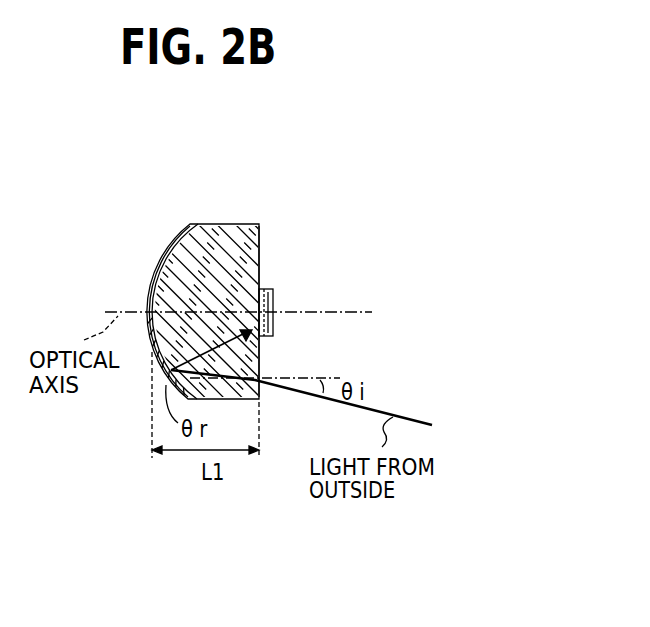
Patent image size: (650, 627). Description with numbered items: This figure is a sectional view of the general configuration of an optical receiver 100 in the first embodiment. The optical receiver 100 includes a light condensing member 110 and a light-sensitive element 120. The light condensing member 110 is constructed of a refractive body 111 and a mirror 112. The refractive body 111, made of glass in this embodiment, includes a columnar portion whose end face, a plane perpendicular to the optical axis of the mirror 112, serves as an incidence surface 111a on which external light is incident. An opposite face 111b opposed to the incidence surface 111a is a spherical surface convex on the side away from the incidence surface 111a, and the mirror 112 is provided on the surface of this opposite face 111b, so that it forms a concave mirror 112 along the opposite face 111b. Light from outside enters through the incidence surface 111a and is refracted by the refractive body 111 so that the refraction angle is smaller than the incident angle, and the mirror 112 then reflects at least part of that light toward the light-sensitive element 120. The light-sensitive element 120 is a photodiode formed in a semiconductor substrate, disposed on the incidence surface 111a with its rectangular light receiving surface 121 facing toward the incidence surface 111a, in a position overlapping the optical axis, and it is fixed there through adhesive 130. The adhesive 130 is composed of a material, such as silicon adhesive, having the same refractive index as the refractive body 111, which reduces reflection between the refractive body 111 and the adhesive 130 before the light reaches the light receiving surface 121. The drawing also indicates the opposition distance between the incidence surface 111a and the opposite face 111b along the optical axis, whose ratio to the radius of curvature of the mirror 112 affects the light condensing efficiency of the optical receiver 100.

The optical receiver 100 is at (280, 217).
The light condensing member 110 is at (248, 172).
The refractive body 111 is at (227, 224).
The incidence surface 111a is at (260, 264).
The opposite face 111b is at (151, 284).
The mirror 112 is at (184, 228).
The light-sensitive element 120 is at (273, 295).
The light receiving surface 121 is at (262, 292).
The adhesive 130 is at (274, 331).